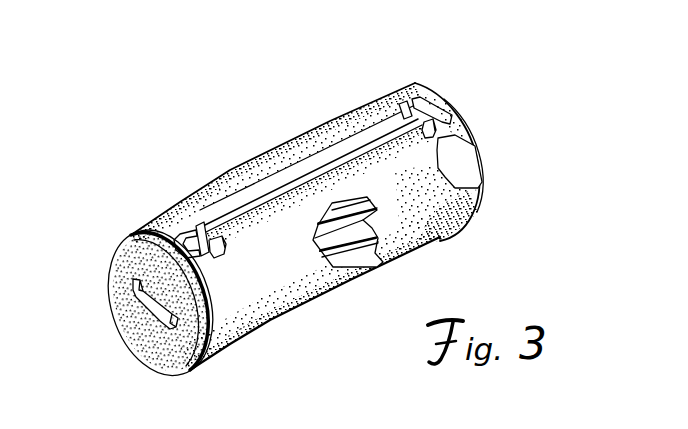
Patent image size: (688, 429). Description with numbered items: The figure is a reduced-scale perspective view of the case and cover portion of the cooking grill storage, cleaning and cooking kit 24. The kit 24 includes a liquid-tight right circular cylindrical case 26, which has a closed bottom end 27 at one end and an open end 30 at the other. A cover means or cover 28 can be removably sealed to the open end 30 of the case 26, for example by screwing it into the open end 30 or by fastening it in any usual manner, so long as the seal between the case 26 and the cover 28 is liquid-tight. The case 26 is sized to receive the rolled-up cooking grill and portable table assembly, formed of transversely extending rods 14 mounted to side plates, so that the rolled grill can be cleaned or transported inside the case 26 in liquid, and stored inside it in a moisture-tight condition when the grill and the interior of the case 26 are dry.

The rods 14 is at (375, 252).
The cooking grill storage, cleaning and cooking kit 24 is at (300, 120).
The cylindrical case 26 is at (410, 82).
The closed bottom end 27 is at (478, 150).
The cover 28 is at (137, 263).
The open end 30 is at (125, 247).